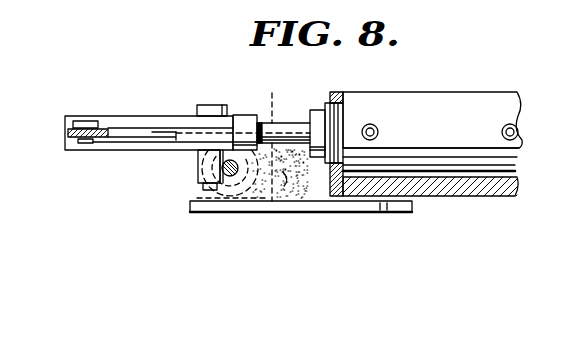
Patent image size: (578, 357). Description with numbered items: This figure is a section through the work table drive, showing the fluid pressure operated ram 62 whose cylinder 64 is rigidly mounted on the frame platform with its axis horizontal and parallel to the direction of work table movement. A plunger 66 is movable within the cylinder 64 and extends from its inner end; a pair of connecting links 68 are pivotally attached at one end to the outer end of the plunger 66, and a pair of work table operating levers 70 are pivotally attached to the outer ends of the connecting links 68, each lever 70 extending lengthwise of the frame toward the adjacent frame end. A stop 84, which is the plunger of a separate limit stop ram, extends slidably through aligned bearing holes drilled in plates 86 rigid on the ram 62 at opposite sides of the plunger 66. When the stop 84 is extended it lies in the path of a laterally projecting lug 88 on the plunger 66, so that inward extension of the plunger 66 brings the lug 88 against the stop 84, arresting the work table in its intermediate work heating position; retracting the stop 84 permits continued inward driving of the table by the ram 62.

The fluid pressure operated ram 62 is at (378, 92).
The cylinder 64 is at (485, 98).
The plunger 66 is at (275, 118).
The connecting links 68 is at (123, 115).
The work table operating levers 70 is at (152, 132).
The stop 84 is at (235, 176).
The plates 86 is at (290, 187).
The lug 88 is at (203, 167).